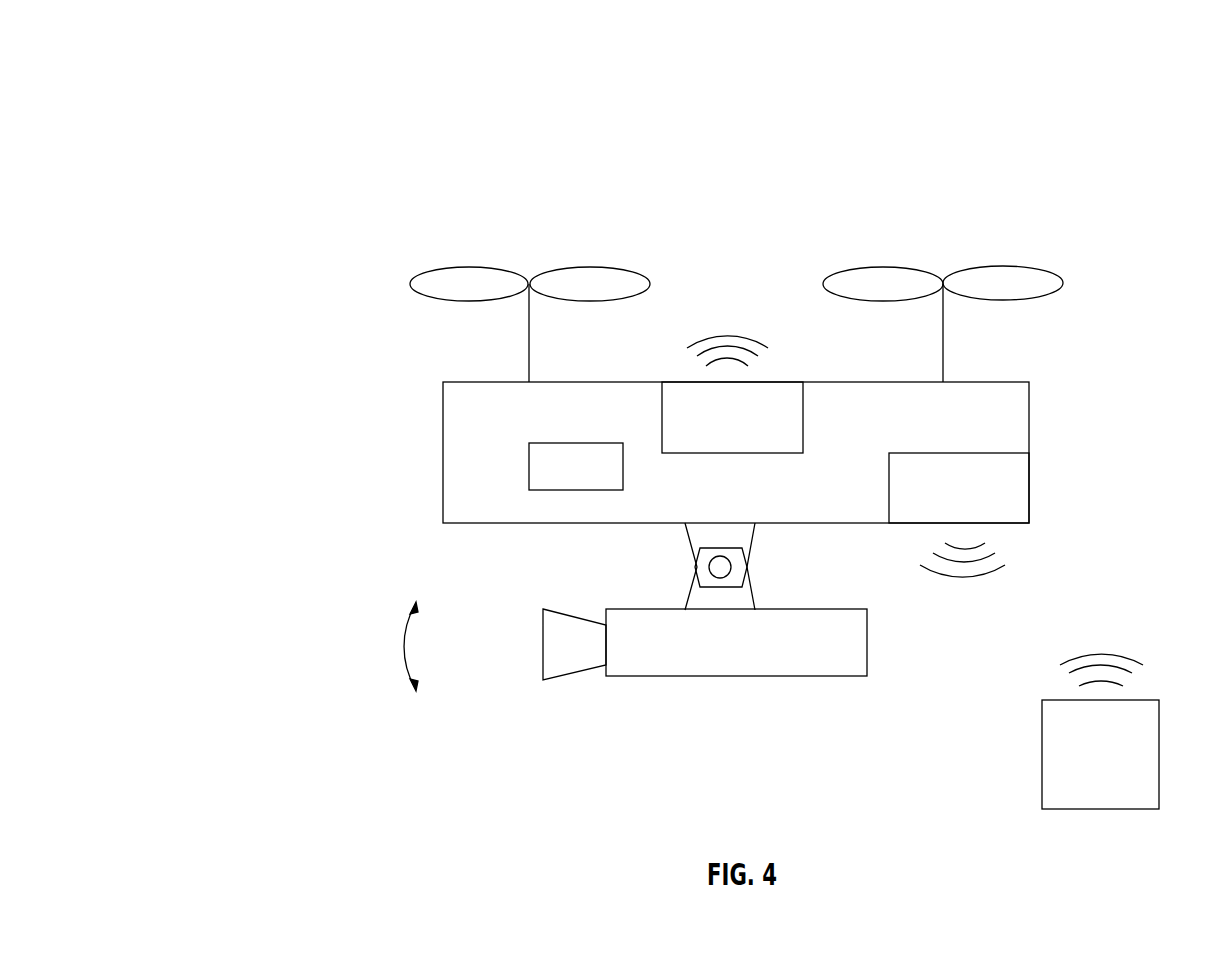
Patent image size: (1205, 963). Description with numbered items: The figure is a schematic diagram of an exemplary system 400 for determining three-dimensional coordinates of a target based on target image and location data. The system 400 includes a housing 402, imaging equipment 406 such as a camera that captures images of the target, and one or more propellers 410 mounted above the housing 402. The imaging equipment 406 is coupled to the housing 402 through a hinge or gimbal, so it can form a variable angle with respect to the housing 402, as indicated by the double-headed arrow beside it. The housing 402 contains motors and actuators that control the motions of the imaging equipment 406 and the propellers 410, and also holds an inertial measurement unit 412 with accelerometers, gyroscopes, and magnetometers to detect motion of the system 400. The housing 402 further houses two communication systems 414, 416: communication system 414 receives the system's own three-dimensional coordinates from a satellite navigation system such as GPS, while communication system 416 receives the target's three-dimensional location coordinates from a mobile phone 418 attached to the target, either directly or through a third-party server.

The system 400 is at (124, 66).
The housing 402 is at (443, 428).
The imaging equipment 406 is at (545, 658).
The propellers 410 is at (490, 275).
The inertial measurement unit 412 is at (576, 466).
The communication system 414 is at (771, 400).
The communication system 416 is at (1013, 508).
The mobile phone 418 is at (1046, 761).